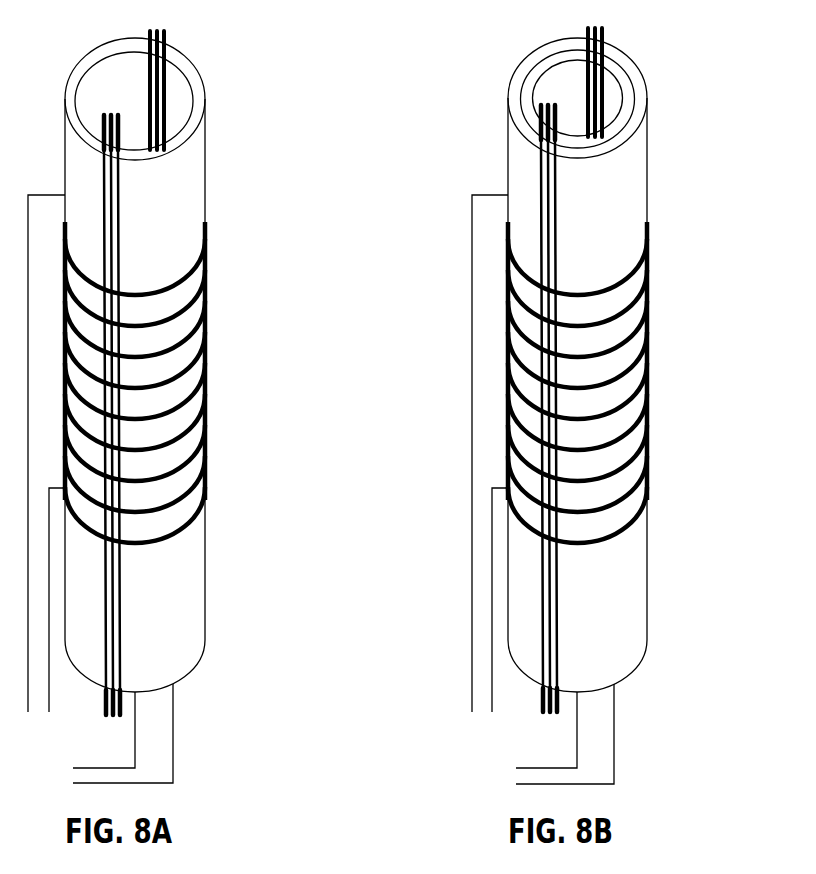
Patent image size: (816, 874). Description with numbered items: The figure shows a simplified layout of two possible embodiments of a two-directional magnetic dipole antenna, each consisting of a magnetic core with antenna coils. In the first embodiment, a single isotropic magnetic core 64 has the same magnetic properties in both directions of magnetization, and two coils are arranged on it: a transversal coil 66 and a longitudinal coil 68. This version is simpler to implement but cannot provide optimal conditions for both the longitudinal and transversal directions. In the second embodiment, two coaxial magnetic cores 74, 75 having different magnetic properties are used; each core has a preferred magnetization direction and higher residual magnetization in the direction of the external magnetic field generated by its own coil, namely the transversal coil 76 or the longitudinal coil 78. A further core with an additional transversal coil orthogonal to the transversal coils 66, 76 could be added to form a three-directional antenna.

In FIG. 8A, the magnetic core 64 is at (196, 104).
In FIG. 8A, the transversal coil 66 is at (117, 215).
In FIG. 8A, the longitudinal coil 68 is at (207, 347).
In FIG. 8B, the coaxial magnetic core 74 is at (607, 63).
In FIG. 8B, the coaxial magnetic core 75 is at (640, 103).
In FIG. 8B, the transversal coil 76 is at (540, 173).
In FIG. 8B, the longitudinal coil 78 is at (652, 325).